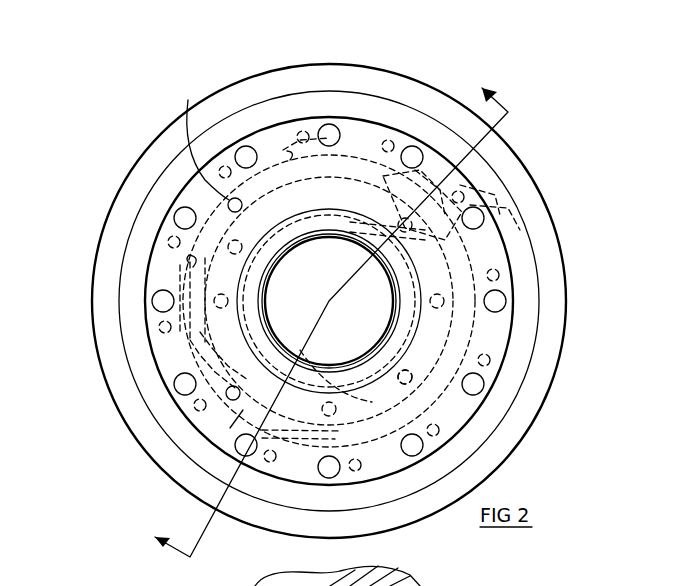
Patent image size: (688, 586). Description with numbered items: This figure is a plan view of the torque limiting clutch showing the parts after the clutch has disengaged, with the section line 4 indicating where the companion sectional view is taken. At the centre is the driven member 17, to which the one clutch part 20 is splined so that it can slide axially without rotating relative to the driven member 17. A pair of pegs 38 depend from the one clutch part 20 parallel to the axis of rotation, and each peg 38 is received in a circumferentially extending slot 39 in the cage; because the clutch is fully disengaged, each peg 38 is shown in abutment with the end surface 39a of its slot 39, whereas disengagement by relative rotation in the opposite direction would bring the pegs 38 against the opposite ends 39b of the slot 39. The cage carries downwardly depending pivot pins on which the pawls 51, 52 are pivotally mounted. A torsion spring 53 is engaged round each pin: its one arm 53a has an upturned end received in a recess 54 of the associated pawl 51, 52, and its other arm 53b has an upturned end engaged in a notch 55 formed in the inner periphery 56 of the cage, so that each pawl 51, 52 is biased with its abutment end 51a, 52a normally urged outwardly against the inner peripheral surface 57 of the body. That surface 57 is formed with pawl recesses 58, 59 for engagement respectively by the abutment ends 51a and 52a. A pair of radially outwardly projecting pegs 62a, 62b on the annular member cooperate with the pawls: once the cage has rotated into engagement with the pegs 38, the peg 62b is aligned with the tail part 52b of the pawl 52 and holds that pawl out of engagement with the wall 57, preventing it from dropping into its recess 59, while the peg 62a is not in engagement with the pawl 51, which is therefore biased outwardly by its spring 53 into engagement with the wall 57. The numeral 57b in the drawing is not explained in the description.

The section line 4- 4 is at (325, 315).
The driven member 17 is at (329, 301).
The one clutch part 20 is at (506, 330).
The peg 38 is at (207, 262).
The slot 39 is at (266, 165).
The end surface 39a is at (165, 513).
The opposite end 39b is at (403, 50).
The pawl 51 is at (350, 437).
The abutment end 51a is at (180, 343).
The pawl 52 is at (503, 217).
The abutment end 52a is at (290, 140).
The tail part 52b is at (495, 192).
The torsion spring 53 is at (405, 185).
The one arm 53a is at (470, 182).
The other arm 53b is at (346, 268).
The recess 54 is at (325, 426).
The notch 55 is at (342, 377).
The inner periphery 56 is at (405, 320).
The inner peripheral surface 57 is at (470, 256).
The carrier portion 57b is at (318, 362).
The pawl recess 58 is at (190, 180).
The pawl recess 59 is at (425, 175).
The peg 62a is at (407, 383).
The peg 62b is at (508, 208).